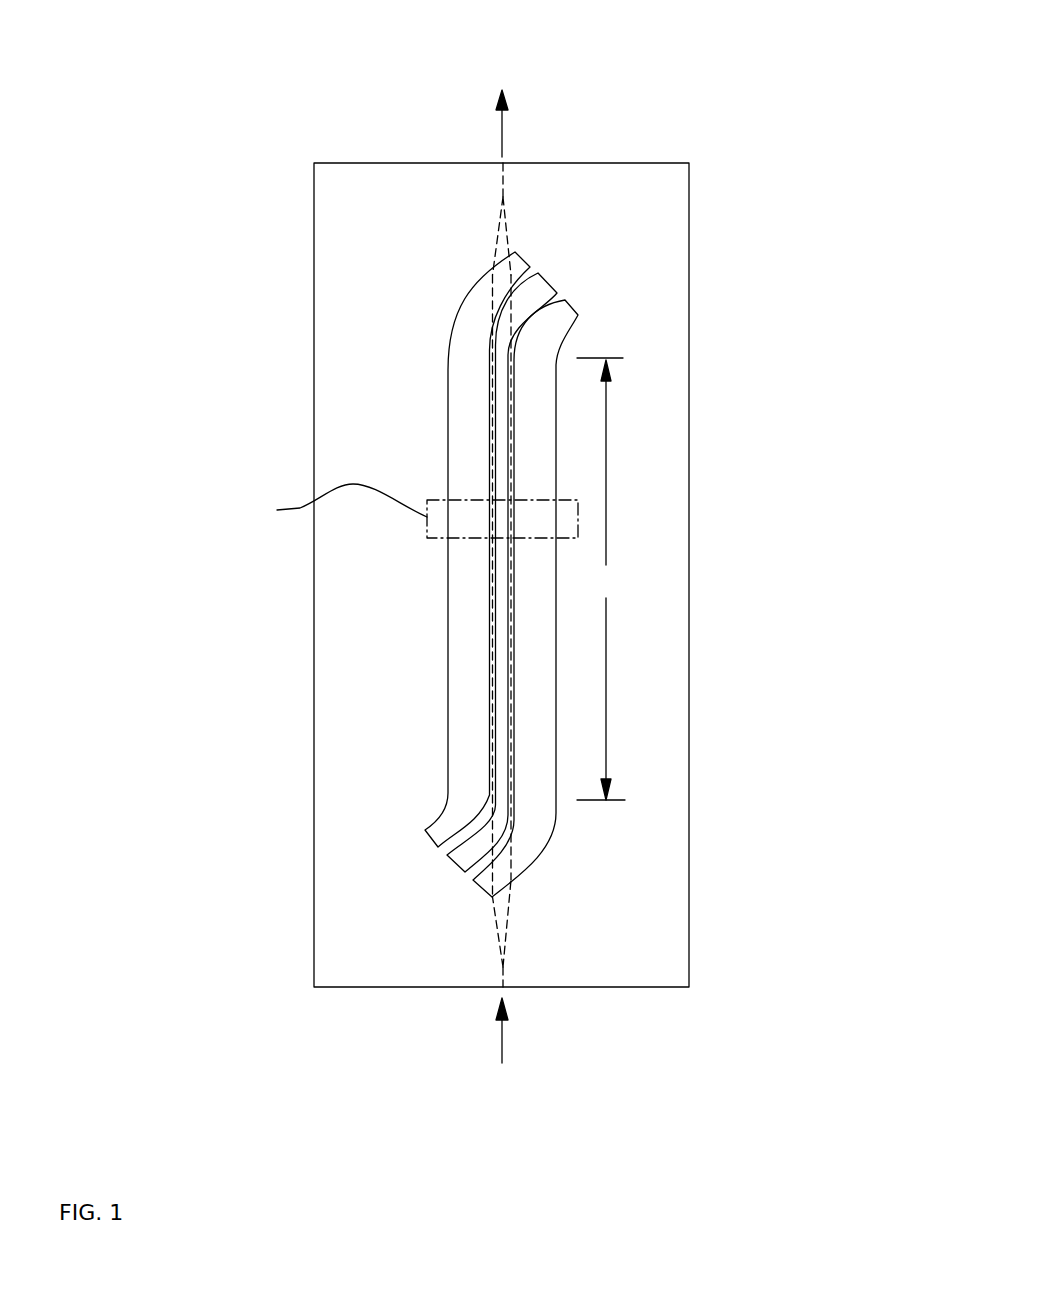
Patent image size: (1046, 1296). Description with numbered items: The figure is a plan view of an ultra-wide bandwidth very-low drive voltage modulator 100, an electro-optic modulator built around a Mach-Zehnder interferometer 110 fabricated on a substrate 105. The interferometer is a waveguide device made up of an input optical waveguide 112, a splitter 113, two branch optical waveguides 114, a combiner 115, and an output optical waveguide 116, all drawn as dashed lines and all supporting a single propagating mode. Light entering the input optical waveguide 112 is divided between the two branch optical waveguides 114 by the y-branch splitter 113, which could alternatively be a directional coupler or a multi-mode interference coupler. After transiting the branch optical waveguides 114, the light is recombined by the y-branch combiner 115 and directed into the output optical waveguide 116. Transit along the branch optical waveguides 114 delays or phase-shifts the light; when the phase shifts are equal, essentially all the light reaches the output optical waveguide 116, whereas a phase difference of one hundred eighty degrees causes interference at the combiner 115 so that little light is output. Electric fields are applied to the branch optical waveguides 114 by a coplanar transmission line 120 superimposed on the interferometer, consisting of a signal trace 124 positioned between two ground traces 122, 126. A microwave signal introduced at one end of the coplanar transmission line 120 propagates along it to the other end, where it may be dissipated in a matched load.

The ultra-wide bandwidth very-low drive voltage modulator 100 is at (244, 72).
The substrate 105 is at (692, 367).
The Mach-Zehnder interferometer 110 is at (548, 193).
The input optical waveguide 112 is at (500, 967).
The splitter 113 is at (500, 913).
The branch optical waveguides 114 is at (513, 612).
The combiner 115 is at (497, 228).
The output optical waveguide 116 is at (501, 181).
The coplanar transmission line 120 is at (166, 838).
The ground trace 122 is at (438, 845).
The signal trace 124 is at (465, 870).
The ground trace 126 is at (492, 897).